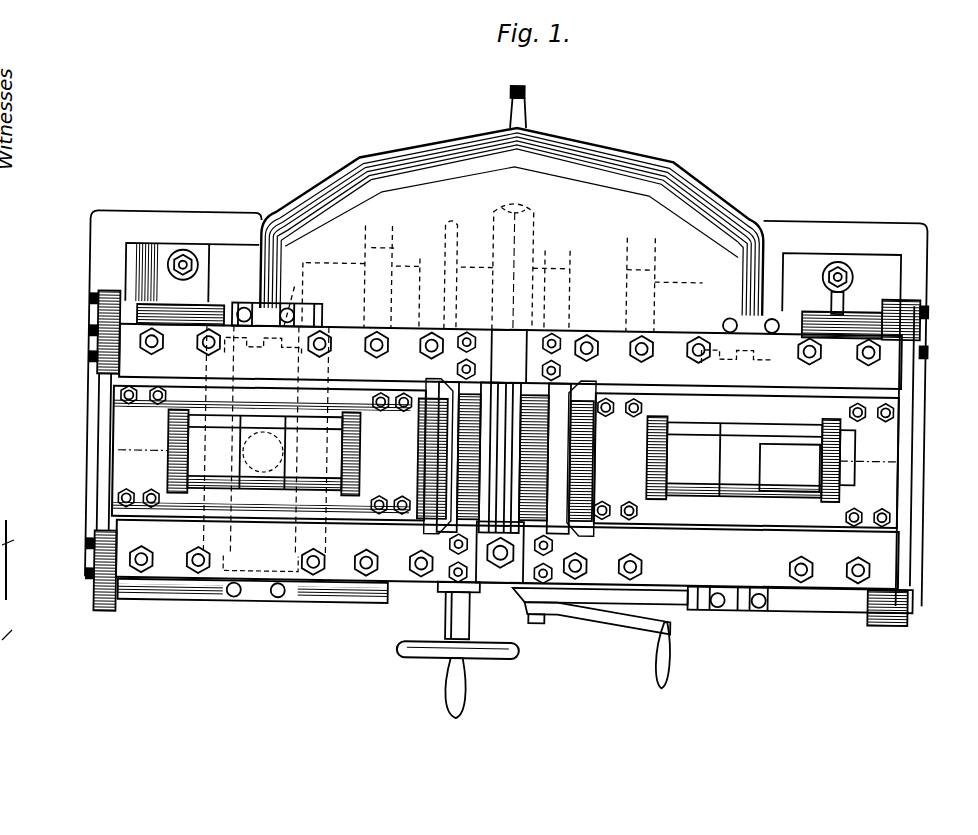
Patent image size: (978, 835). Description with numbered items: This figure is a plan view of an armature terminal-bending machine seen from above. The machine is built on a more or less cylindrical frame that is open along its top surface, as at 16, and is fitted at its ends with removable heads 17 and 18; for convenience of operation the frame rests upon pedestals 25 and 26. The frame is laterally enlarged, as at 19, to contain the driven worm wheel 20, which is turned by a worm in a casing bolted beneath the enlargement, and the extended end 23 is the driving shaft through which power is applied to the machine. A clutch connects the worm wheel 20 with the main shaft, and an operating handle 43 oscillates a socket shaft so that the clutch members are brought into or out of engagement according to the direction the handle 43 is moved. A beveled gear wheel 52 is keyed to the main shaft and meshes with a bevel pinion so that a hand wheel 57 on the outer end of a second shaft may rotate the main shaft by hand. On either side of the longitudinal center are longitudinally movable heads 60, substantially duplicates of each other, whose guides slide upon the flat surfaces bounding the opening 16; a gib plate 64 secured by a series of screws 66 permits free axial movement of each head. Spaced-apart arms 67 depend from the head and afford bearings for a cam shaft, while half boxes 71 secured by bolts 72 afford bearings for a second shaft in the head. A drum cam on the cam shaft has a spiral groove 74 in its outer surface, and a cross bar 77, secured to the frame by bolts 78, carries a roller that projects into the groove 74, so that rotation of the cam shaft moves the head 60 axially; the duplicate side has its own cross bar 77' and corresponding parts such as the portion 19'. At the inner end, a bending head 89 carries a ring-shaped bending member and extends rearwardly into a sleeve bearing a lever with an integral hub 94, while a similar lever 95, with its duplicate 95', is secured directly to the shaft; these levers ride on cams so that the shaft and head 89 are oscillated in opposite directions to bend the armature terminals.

The open top surface 16 is at (845, 428).
The removable head 17 is at (90, 450).
The removable head 18 is at (916, 330).
The laterally enlarged portion 19 is at (512, 226).
The enlarged portion (prime side) 19' is at (266, 448).
The driven worm wheel 20 is at (522, 226).
The driving shaft 23 is at (523, 110).
The pedestal 25 is at (188, 217).
The pedestal 26 is at (838, 211).
The operating handle 43 is at (651, 622).
The beveled gear wheel 52 is at (436, 252).
The hand wheel 57 is at (420, 640).
The longitudinally movable head 60 is at (856, 452).
The gib plate 64 is at (842, 332).
The screws 66 is at (585, 340).
The depending arm 67 is at (258, 372).
The half boxes 71 is at (505, 457).
The bolts 72 is at (880, 504).
The spiral groove 74 is at (276, 310).
The cross bar 77 is at (535, 465).
The cross bar (prime side) 77' is at (244, 613).
The bolts 78 is at (735, 318).
The head 89 is at (448, 425).
The hub 94 is at (332, 440).
The lever 95 is at (897, 458).
The lever (prime side) 95' is at (111, 463).